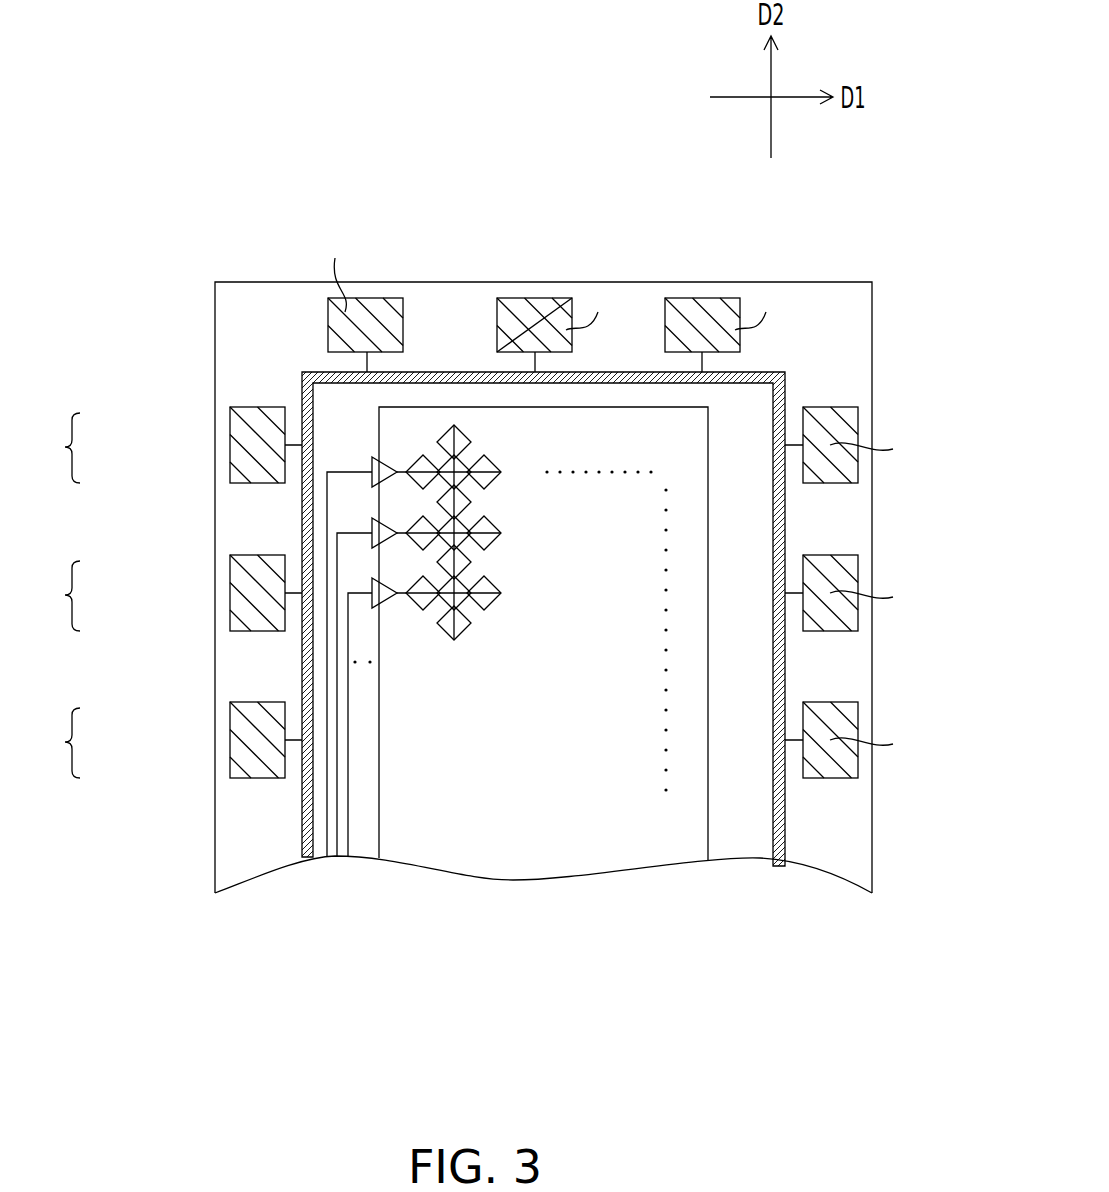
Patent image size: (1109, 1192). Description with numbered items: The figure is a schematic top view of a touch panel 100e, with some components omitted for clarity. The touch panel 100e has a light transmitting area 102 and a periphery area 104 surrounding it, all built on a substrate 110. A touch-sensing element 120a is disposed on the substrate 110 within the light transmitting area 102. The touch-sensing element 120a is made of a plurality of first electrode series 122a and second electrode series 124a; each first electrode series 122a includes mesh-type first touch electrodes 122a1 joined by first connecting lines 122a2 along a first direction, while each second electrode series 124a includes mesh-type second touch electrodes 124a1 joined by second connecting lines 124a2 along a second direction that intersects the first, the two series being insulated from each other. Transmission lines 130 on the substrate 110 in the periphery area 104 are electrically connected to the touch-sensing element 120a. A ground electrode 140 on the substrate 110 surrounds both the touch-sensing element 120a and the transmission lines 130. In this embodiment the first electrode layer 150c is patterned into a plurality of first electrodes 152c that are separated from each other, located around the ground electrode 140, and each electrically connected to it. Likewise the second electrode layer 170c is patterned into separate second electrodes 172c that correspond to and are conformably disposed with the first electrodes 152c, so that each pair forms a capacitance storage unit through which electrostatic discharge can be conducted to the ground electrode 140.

The touch panel 100e is at (799, 958).
The substrate 110 is at (837, 288).
The light transmitting area 102 is at (699, 410).
The periphery area 104 is at (752, 403).
The ground electrode 140 is at (312, 372).
The transmission lines 130 is at (348, 830).
The touch-sensing element 120a is at (418, 173).
The first electrode series 122a is at (497, 224).
The first touch electrodes 122a1 is at (421, 466).
The first connecting lines 122a2 is at (452, 466).
The second electrode series 124a is at (678, 224).
The second touch electrodes 124a1 is at (456, 440).
The second connecting lines 124a2 is at (460, 462).
The second electrodes 172c is at (180, 592).
The second electrode layer 170c is at (238, 445).
The first electrodes 152c is at (188, 612).
The first electrode layer 150c is at (293, 592).